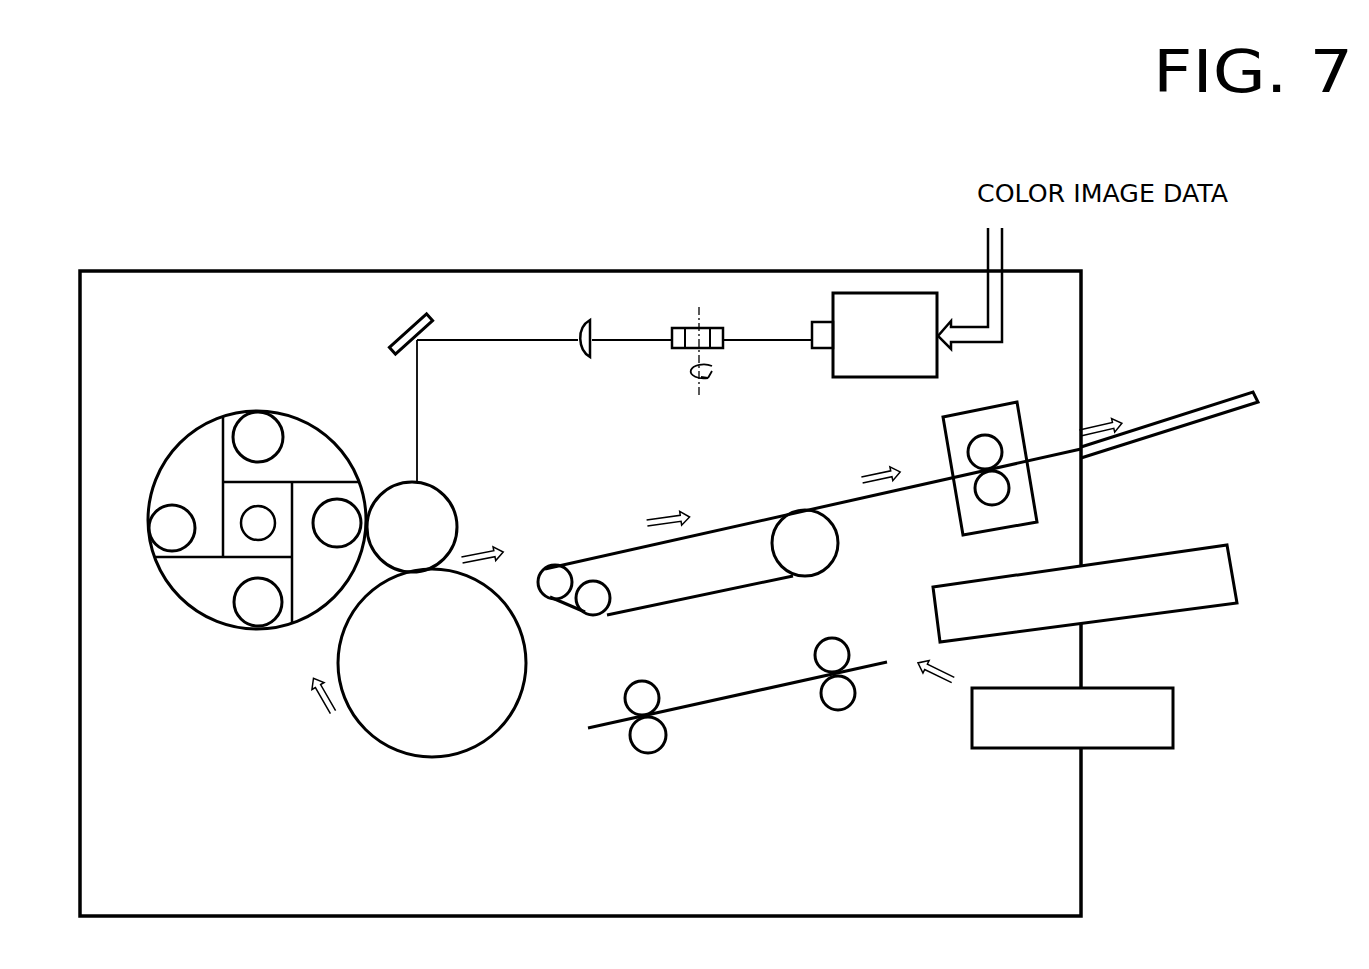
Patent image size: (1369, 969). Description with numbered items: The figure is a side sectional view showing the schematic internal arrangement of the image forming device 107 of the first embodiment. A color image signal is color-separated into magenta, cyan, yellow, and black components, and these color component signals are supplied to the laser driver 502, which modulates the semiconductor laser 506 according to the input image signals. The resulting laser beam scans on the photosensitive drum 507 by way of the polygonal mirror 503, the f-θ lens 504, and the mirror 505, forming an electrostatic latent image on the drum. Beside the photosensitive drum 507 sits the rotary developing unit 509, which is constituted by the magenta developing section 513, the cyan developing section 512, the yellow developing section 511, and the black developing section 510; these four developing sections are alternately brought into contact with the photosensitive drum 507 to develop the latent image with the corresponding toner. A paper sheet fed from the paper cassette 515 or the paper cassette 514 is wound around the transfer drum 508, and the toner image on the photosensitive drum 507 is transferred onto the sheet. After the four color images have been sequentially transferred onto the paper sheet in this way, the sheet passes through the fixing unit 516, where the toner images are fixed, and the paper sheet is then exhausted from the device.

The image forming device 107 is at (1082, 346).
The laser driver 502 is at (880, 293).
The polygonal mirror 503 is at (720, 328).
The f-θ lens 504 is at (579, 322).
The mirror 505 is at (408, 325).
The semiconductor laser 506 is at (812, 348).
The photosensitive drum 507 is at (445, 490).
The transfer drum 508 is at (370, 732).
The rotary developing unit 509 is at (246, 521).
The black developing section 510 is at (255, 410).
The yellow developing section 511 is at (148, 523).
The cyan developing section 512 is at (253, 627).
The magenta developing section 513 is at (350, 500).
The paper cassette 514 is at (1232, 562).
The paper cassette 515 is at (1173, 733).
The fixing unit 516 is at (1023, 420).